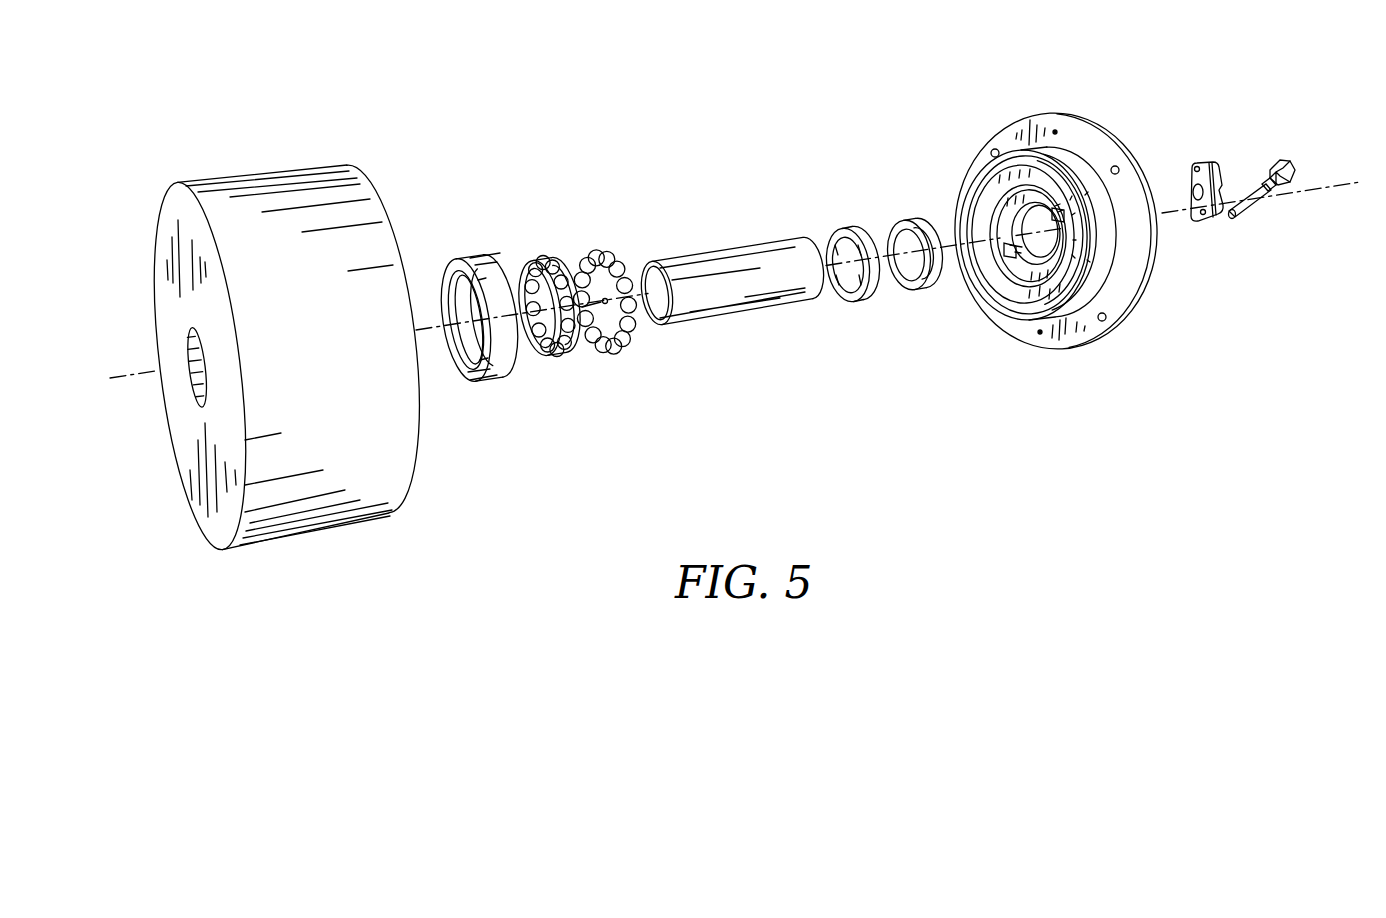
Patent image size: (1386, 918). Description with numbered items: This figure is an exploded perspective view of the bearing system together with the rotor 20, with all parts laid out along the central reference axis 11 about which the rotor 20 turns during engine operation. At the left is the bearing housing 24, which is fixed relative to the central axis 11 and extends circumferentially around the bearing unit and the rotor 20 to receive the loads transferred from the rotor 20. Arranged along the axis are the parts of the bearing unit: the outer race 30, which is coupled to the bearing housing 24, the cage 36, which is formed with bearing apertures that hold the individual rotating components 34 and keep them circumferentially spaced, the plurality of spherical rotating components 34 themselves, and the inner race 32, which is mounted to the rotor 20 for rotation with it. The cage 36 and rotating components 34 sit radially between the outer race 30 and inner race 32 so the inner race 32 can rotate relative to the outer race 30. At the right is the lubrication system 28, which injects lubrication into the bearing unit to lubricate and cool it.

The central reference axis 11 is at (1328, 183).
The rotor 20 is at (714, 226).
The bearing housing 24 is at (277, 147).
The lubrication system 28 is at (1240, 132).
The outer race 30 is at (476, 240).
The inner race 32 is at (878, 192).
The rotating components 34 is at (600, 228).
The cage 36 is at (542, 240).